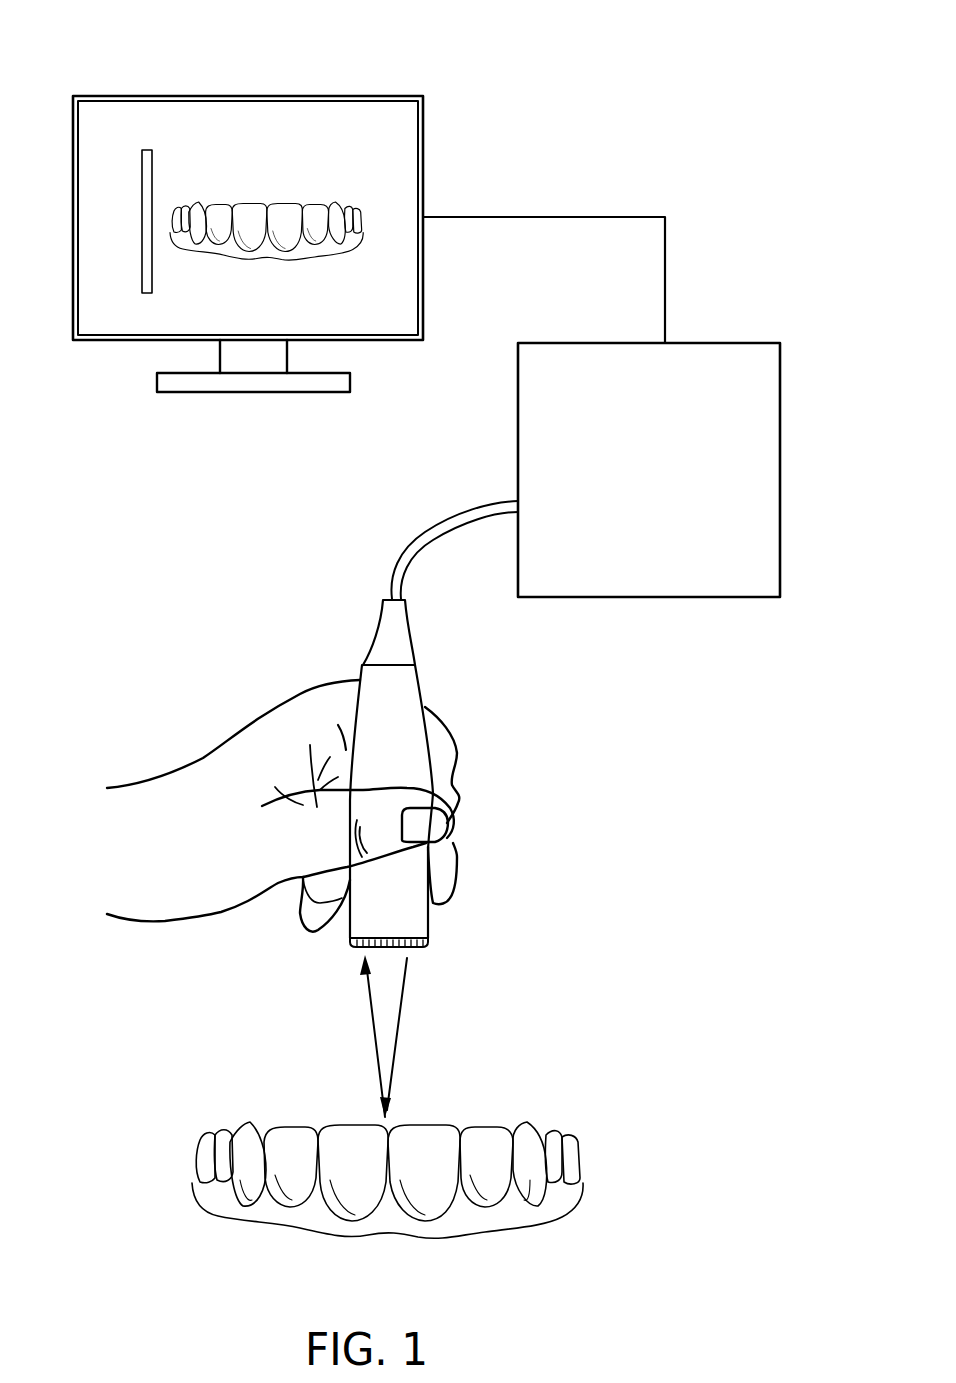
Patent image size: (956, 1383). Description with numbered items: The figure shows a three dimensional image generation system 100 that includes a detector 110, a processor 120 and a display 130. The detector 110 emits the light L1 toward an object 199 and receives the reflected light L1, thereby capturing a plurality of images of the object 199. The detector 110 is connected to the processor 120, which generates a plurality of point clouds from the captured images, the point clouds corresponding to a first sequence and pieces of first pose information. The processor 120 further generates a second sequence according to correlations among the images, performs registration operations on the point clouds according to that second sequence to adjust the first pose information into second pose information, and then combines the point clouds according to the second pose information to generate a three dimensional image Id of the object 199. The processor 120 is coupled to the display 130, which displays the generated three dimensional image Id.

The three dimensional image generation system 100 is at (700, 41).
The detector 110 is at (408, 697).
The processor 120 is at (713, 343).
The display 130 is at (385, 96).
The three dimensional image Id is at (376, 211).
The object 199 is at (492, 1125).
The light L1 is at (384, 1036).